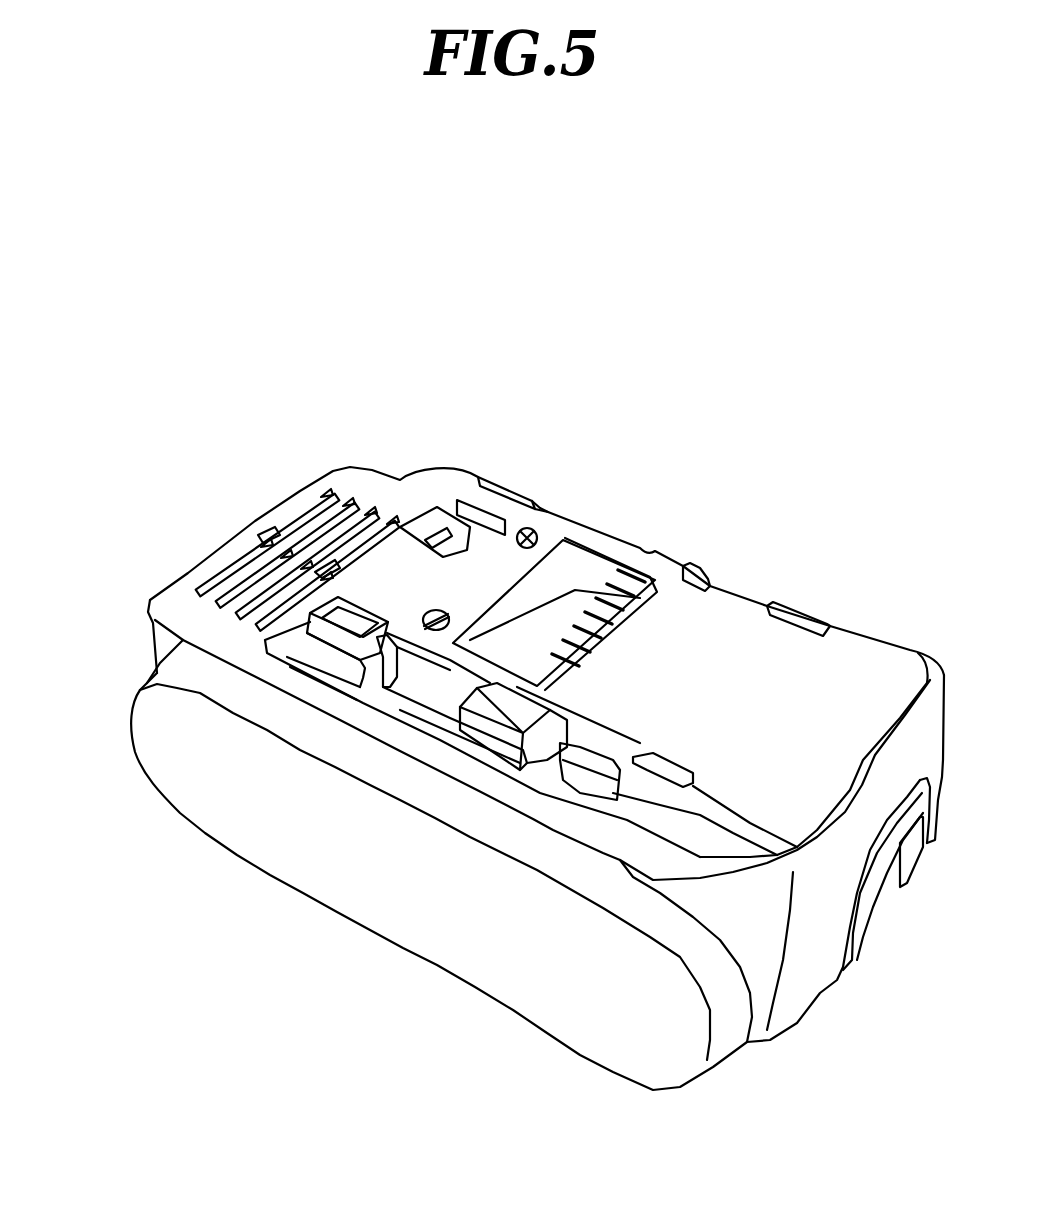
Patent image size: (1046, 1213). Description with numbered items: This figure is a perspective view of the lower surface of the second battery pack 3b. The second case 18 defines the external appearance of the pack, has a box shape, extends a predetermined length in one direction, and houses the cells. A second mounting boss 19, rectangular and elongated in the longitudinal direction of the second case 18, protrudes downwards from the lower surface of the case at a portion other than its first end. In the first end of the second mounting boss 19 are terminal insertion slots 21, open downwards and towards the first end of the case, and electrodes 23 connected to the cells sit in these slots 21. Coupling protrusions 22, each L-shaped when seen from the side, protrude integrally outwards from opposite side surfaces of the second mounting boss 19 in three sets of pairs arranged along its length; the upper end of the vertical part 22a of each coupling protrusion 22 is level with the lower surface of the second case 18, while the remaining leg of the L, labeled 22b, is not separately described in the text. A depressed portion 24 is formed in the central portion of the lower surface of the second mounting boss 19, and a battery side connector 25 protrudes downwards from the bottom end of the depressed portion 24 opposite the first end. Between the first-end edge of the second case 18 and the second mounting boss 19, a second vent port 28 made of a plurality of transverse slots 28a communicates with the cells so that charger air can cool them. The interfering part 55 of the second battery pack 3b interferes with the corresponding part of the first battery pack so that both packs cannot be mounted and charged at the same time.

The second battery pack 3b is at (622, 506).
The second case 18 is at (230, 632).
The second mounting boss 19 is at (703, 643).
The terminal insertion slots 21 is at (300, 558).
The coupling protrusions 22 is at (533, 503).
The vertical part 22a is at (362, 662).
The guide groove 22b is at (340, 648).
The electrodes 23 is at (330, 570).
The depressed portion 24 is at (557, 620).
The battery side connector 25 is at (625, 595).
The second vent port 28 is at (340, 522).
The slots 28a is at (343, 503).
The interfering part 55 is at (197, 578).